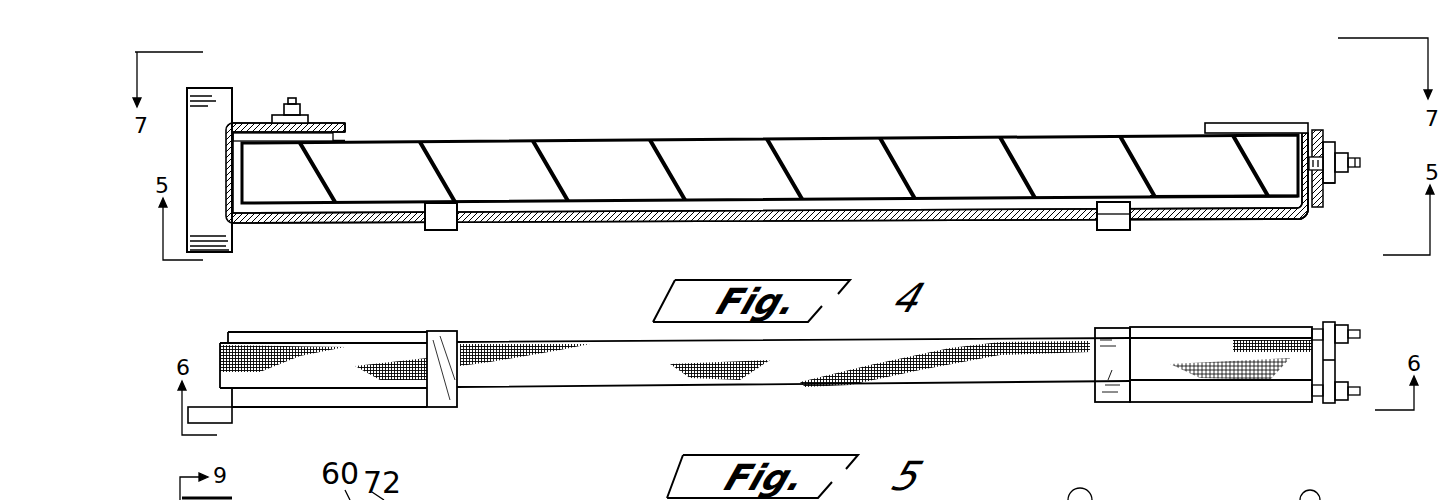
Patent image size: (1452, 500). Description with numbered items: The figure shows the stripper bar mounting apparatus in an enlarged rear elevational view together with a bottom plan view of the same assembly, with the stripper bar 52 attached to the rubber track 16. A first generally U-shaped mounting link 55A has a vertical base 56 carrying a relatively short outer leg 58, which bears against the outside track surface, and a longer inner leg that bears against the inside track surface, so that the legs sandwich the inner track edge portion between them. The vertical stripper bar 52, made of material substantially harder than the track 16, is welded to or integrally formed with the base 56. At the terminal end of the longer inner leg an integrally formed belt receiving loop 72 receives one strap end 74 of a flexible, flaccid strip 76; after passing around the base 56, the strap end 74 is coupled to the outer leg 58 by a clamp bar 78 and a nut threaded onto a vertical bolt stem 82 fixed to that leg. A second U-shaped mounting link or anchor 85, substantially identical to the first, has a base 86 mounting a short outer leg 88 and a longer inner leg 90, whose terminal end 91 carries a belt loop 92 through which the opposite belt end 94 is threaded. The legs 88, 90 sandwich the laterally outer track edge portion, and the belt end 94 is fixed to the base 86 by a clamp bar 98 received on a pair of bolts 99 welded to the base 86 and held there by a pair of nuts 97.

In FIG. 4, the track 16 is at (732, 160).
In FIG. 4, the stripper bar 52 is at (222, 231).
In FIG. 5, the stripper bar 52 is at (220, 413).
In FIG. 5, the tensioning assembly 55A is at (268, 317).
In FIG. 4, the vertical base 56 is at (240, 177).
In FIG. 4, the outer leg 58 is at (334, 136).
In FIG. 4, the belt receiving loop 72 is at (442, 232).
In FIG. 5, the belt receiving loop 72 is at (455, 405).
In FIG. 4, the strap end 74 is at (335, 121).
In FIG. 4, the flexible, flaccid strip 76 is at (860, 222).
In FIG. 5, the flexible, flaccid strip 76 is at (741, 386).
In FIG. 4, the clamp bar 78 is at (272, 116).
In FIG. 4, the vertical bolt stem 82 is at (289, 98).
In FIG. 4, the second U-shaped mounting link or anchor 85 is at (1165, 250).
In FIG. 5, the second U-shaped mounting link or anchor 85 is at (1212, 420).
In FIG. 4, the base 86 is at (1324, 207).
In FIG. 4, the outer leg 88 is at (1220, 128).
In FIG. 4, the inner leg 90 is at (1185, 188).
In FIG. 4, the terminal end 91 is at (1110, 210).
In FIG. 4, the belt loop 92 is at (1108, 228).
In FIG. 5, the belt loop 92 is at (1095, 393).
In FIG. 4, the belt end 94 is at (1320, 130).
In FIG. 4, the nuts 97 is at (1337, 148).
In FIG. 5, the nuts 97 is at (1350, 400).
In FIG. 4, the clamp bar 98 is at (1328, 183).
In FIG. 5, the clamp bar 98 is at (1330, 360).
In FIG. 4, the bolts 99 is at (1362, 165).
In FIG. 5, the bolts 99 is at (1358, 327).